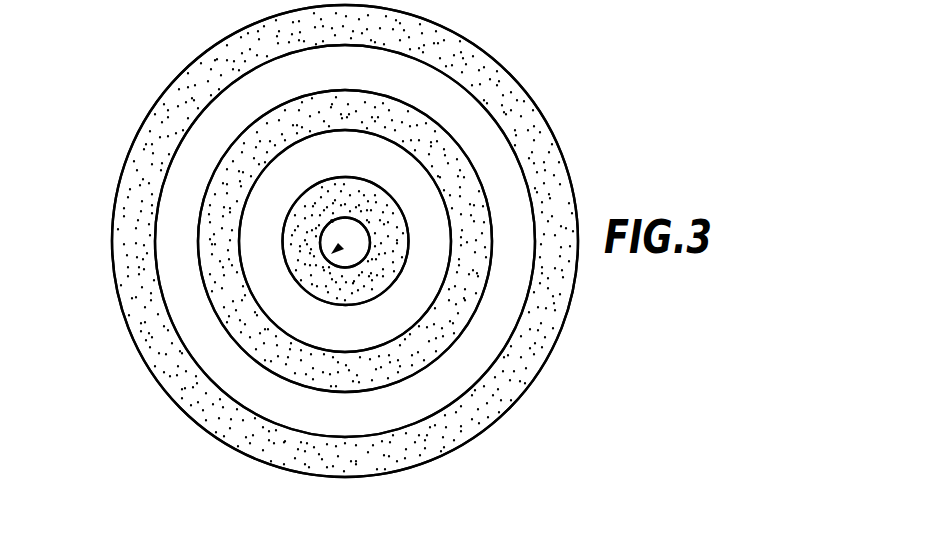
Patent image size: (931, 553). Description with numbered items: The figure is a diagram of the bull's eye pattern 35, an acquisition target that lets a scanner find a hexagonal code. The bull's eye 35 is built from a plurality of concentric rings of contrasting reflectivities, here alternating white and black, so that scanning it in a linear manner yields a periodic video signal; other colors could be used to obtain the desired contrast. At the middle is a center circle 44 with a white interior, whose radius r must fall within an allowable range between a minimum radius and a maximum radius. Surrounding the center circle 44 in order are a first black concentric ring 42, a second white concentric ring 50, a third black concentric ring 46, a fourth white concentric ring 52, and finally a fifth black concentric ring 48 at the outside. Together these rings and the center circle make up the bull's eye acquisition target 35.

The bull's eye pattern 35 is at (572, 175).
The fifth black concentric ring 48 is at (542, 150).
The fourth white concentric ring 52 is at (525, 232).
The third black concentric ring 46 is at (466, 311).
The second white concentric ring 50 is at (310, 328).
The first black concentric ring 42 is at (313, 275).
The center circle 44 is at (343, 230).
The radius r is at (345, 241).